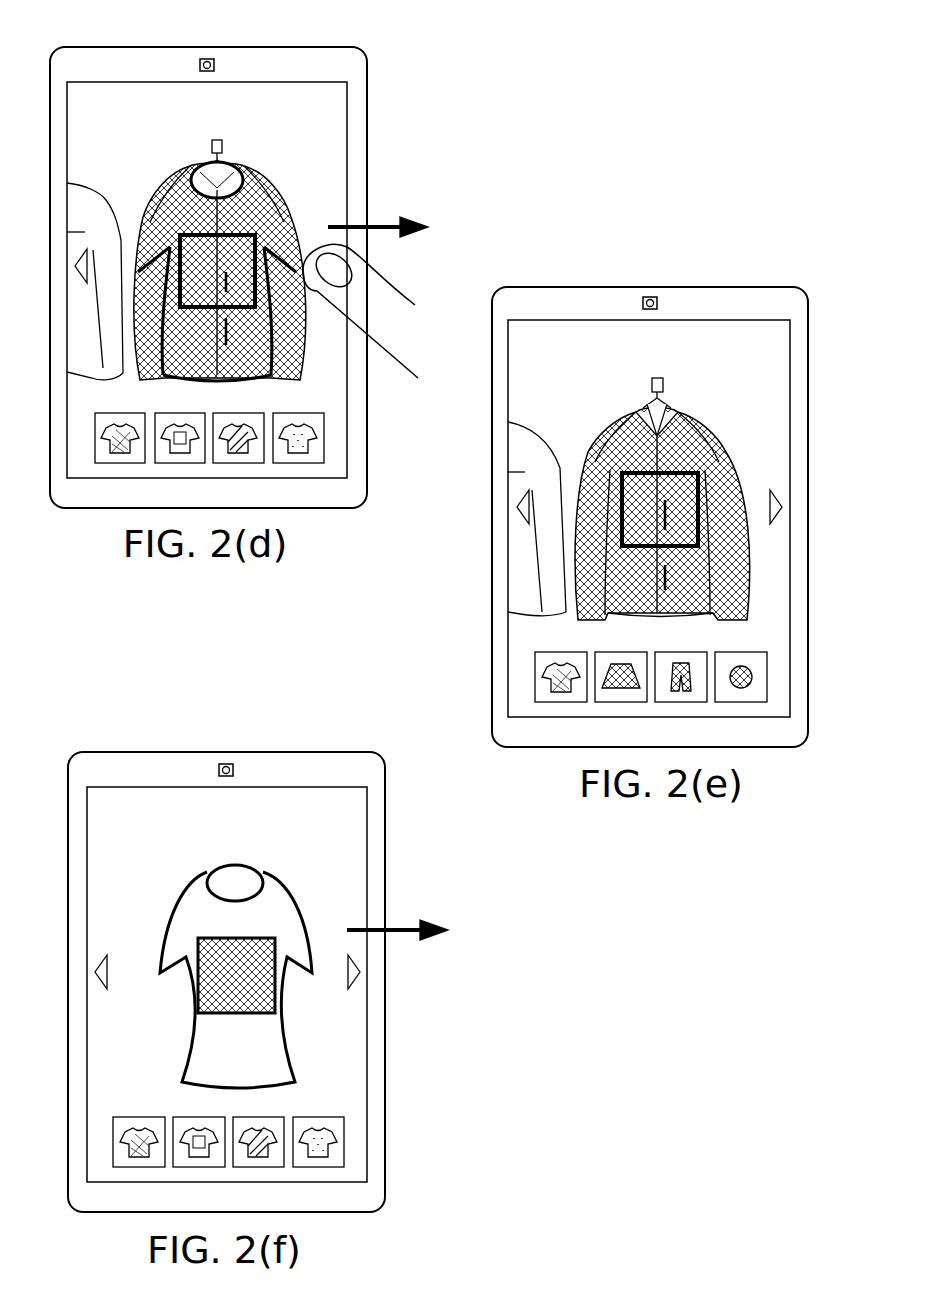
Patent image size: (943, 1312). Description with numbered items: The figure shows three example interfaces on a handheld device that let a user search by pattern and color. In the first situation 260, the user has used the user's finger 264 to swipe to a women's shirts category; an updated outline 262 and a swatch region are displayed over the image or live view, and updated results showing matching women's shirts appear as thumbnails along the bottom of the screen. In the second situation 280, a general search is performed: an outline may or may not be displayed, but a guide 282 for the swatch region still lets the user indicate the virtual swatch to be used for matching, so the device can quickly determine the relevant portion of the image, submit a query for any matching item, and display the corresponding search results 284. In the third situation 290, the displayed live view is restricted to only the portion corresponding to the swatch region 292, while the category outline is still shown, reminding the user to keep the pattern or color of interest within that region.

In FIG. 2D, the situation 260 is at (393, 82).
In FIG. 2D, the updated outline 262 is at (300, 210).
In FIG. 2D, the user's finger 264 is at (405, 293).
In FIG. 2E, the situation 280 is at (795, 262).
In FIG. 2E, the guide 282 is at (700, 487).
In FIG. 2E, the search results 284 is at (526, 671).
In FIG. 2F, the situation 290 is at (413, 822).
In FIG. 2F, the swatch region 292 is at (277, 998).